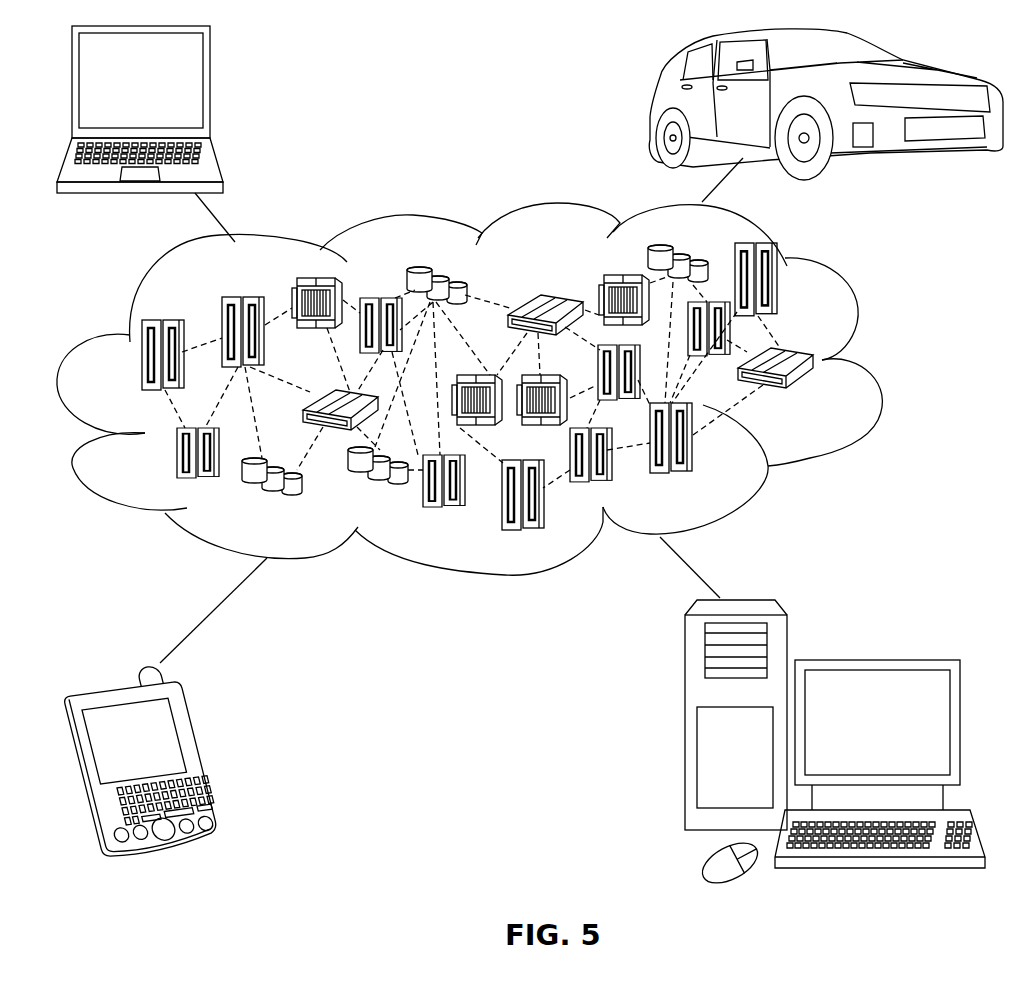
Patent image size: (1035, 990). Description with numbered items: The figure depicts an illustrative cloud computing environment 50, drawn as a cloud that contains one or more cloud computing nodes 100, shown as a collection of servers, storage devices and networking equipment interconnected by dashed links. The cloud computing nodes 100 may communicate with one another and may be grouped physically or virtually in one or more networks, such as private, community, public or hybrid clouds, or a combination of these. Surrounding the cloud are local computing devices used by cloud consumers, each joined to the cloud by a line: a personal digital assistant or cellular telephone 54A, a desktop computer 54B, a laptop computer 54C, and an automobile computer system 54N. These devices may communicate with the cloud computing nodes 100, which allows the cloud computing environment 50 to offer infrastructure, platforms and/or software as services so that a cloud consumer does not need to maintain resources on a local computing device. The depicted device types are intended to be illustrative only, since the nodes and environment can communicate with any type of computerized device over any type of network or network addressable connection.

The cloud computing environment 50 is at (878, 367).
The cloud computing nodes 100 is at (817, 395).
The personal digital assistant or cellular telephone 54A is at (202, 755).
The desktop computer 54B is at (873, 657).
The laptop computer 54C is at (210, 88).
The automobile computer system 54N is at (652, 102).